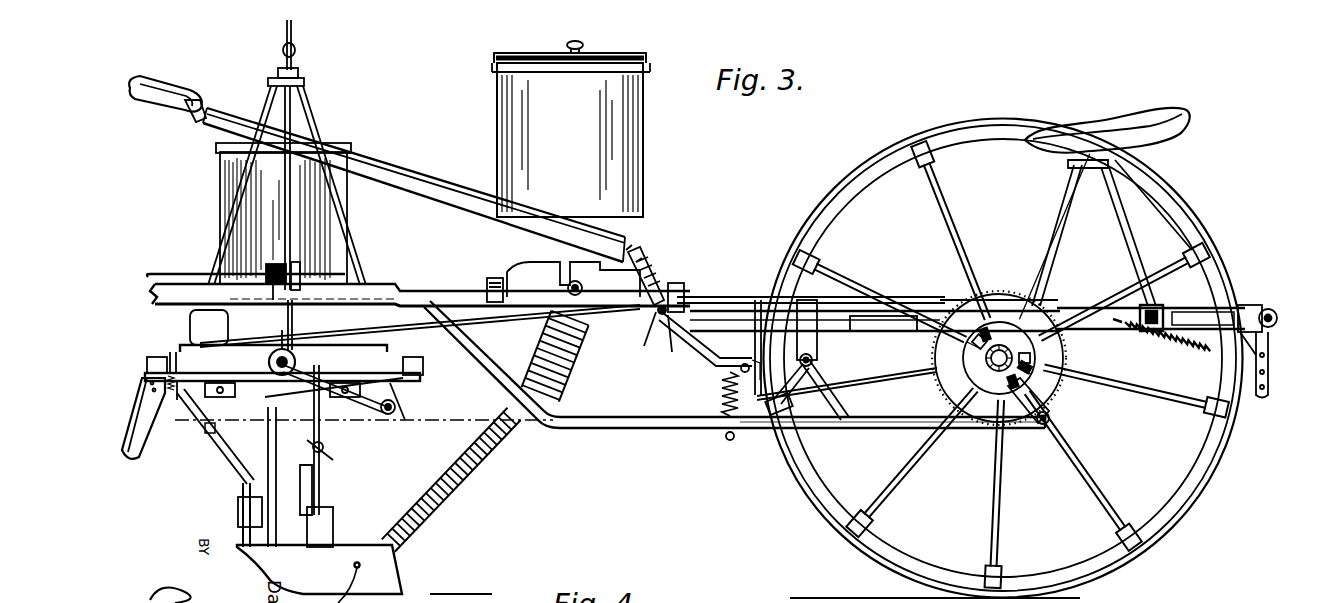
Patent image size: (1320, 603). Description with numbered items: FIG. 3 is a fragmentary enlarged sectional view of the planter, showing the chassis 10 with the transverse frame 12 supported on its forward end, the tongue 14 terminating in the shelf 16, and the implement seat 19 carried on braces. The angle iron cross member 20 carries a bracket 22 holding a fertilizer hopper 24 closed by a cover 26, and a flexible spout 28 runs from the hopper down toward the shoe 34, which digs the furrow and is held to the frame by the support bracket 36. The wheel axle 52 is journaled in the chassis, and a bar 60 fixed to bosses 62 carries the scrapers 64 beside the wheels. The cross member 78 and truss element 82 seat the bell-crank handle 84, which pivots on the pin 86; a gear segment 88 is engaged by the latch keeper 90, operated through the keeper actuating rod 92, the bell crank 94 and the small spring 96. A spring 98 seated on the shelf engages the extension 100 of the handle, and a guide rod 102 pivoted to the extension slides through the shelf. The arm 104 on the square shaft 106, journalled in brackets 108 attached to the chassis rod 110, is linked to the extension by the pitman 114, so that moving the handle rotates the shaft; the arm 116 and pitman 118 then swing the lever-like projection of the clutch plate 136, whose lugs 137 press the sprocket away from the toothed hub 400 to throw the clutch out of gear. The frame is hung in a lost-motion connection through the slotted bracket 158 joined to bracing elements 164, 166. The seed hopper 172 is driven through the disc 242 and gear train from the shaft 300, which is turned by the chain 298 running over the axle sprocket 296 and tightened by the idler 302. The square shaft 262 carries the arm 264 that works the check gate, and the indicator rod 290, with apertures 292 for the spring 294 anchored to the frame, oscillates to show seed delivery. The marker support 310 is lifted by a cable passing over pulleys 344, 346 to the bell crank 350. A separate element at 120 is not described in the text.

The chassis 10 is at (1175, 308).
The frame 12 is at (420, 387).
The tongue 14 is at (160, 306).
The shelf 16 is at (660, 430).
The seat 19 is at (1167, 130).
The angle iron cross member 20 is at (483, 283).
The bracket 22 is at (523, 278).
The hopper 24 is at (645, 167).
The cover 26 is at (630, 57).
The flexible spout 28 is at (568, 372).
The shoe 34 is at (390, 577).
The support bracket 36 is at (135, 440).
The axle 52 is at (940, 380).
The bar 60 is at (1274, 314).
The boss 62 is at (1253, 313).
The scraper 64 is at (1270, 347).
The cross member 78 is at (650, 322).
The truss element 82 is at (873, 331).
The handle 84 is at (391, 180).
The pin 86 is at (664, 325).
The gear segment 88 is at (677, 287).
The latch keeper 90 is at (657, 277).
The keeper actuating rod 92 is at (385, 163).
The bell crank 94 is at (629, 248).
The spring 96 is at (633, 266).
The spring 98 is at (714, 397).
The extension 100 is at (693, 368).
The guide rod 102 is at (733, 440).
The arm 104 is at (808, 433).
The square shaft 106 is at (813, 363).
The bracket 108 is at (808, 327).
The rod 110 is at (847, 330).
The pitman 114 is at (747, 372).
The arm 116 is at (838, 407).
The pitman 118 is at (897, 429).
The crank arm 120 is at (1050, 406).
The plate 136 is at (1035, 358).
The lug 137 is at (985, 340).
The bracket 158 is at (295, 300).
The bracing element 164 is at (407, 388).
The bracing element 166 is at (177, 402).
The hopper 172 is at (333, 220).
The disc 242 is at (288, 232).
The shaft 262 is at (332, 445).
The arm 264 is at (323, 493).
The rod 290 is at (287, 392).
The aperture 292 is at (313, 392).
The spring 294 is at (350, 380).
The sprocket 296 is at (1035, 312).
The chain 298 is at (893, 297).
The shaft 300 is at (259, 353).
The idler gear 302 is at (405, 408).
The support 310 is at (318, 118).
The pulley 344 is at (272, 277).
The pulley 346 is at (282, 267).
The bell crank 350 is at (297, 37).
The hub 400 is at (1040, 345).